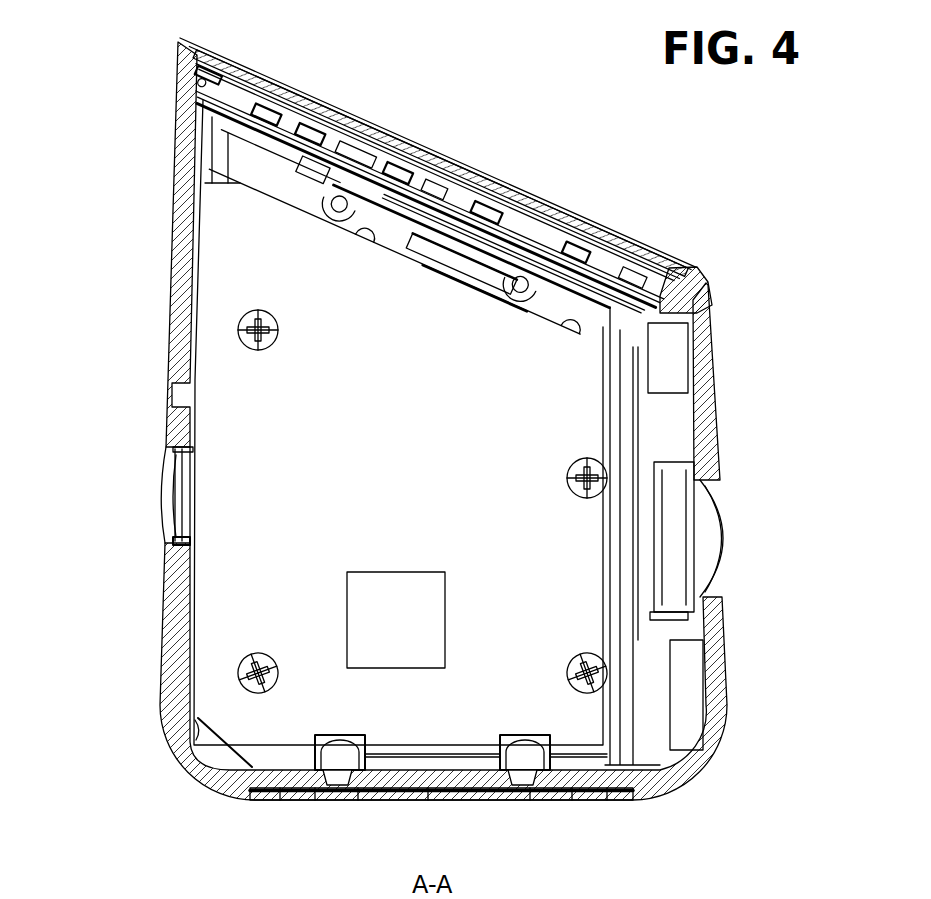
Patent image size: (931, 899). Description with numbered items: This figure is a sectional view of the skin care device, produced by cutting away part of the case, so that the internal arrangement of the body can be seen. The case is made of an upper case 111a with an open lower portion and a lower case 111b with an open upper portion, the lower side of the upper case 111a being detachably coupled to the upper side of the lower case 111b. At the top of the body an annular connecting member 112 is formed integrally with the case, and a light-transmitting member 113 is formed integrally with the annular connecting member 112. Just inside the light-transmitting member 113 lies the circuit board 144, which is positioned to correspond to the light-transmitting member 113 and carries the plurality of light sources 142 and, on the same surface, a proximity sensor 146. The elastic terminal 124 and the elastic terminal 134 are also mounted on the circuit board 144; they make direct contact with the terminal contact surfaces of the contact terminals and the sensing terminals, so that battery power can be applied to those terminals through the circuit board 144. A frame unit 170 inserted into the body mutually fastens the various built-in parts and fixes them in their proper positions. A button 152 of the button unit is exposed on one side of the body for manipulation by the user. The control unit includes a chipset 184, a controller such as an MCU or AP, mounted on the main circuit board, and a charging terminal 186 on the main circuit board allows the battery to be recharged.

The upper case 111a is at (717, 407).
The lower case 111b is at (720, 693).
The annular connecting member 112 is at (683, 280).
The light-transmitting member 113 is at (567, 220).
The elastic terminal 124 is at (452, 190).
The elastic terminal 134 is at (203, 92).
The light sources 142 is at (492, 217).
The circuit board 144 is at (392, 187).
The proximity sensor 146 is at (270, 78).
The button 152 is at (720, 533).
The frame unit 170 is at (617, 332).
The chipset 184 is at (360, 618).
The charging terminal 186 is at (170, 492).